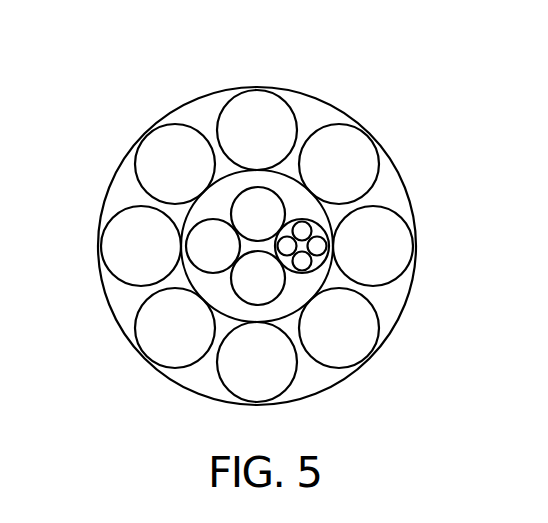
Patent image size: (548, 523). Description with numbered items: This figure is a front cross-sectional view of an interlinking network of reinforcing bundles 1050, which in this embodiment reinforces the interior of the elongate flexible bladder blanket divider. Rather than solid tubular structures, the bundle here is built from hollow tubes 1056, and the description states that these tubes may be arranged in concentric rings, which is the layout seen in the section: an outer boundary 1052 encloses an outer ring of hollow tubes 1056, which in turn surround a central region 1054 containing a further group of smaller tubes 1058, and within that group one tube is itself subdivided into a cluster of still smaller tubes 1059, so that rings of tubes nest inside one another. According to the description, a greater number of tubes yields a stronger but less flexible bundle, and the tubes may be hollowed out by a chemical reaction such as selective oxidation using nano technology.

The interlinking network of reinforcing bundles 1050 is at (270, 216).
The outer jacket 1052 is at (288, 91).
The central tube 1054 is at (185, 212).
The hollow tubes 1056 is at (410, 218).
The optical fiber unit 1058 is at (182, 245).
The optical fiber bundle 1059 is at (331, 240).